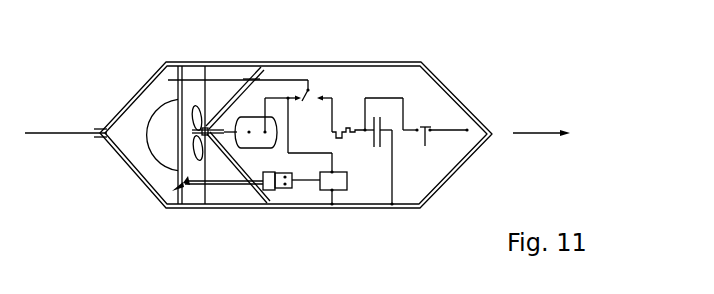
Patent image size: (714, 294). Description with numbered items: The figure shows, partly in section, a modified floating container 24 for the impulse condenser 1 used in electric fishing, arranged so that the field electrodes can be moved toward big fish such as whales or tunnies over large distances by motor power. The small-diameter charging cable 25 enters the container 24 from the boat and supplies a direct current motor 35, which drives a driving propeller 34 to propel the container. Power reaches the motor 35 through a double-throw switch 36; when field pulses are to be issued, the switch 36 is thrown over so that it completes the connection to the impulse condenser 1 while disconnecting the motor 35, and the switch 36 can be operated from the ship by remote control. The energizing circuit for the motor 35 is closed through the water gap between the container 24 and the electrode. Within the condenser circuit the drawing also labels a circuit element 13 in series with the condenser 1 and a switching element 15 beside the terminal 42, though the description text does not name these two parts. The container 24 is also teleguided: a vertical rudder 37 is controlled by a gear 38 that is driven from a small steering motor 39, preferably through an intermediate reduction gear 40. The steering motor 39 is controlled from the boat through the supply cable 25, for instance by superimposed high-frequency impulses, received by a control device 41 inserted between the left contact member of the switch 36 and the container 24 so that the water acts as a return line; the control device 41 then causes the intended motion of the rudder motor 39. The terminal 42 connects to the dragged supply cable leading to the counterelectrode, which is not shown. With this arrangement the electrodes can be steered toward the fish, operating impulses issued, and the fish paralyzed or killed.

The impulse condenser 1 is at (380, 148).
The resistor 13 is at (342, 127).
The switch 15 is at (428, 140).
The container 24 is at (382, 64).
The charging cable 25 is at (63, 138).
The driving propeller 34 is at (196, 106).
The direct current motor 35 is at (250, 128).
The double-throw switch 36 is at (316, 97).
The vertical rudder 37 is at (158, 150).
The gear 38 is at (186, 193).
The steering motor 39 is at (290, 187).
The intermediate reduction gear 40 is at (271, 188).
The control device 41 is at (340, 183).
The terminal 42 is at (460, 128).